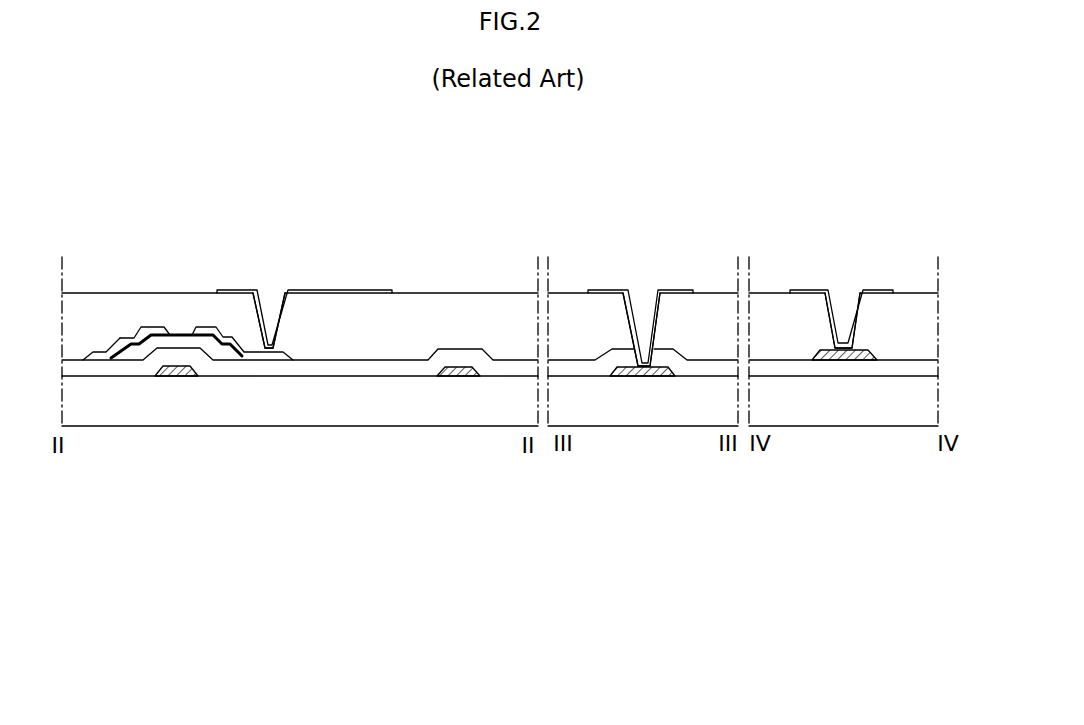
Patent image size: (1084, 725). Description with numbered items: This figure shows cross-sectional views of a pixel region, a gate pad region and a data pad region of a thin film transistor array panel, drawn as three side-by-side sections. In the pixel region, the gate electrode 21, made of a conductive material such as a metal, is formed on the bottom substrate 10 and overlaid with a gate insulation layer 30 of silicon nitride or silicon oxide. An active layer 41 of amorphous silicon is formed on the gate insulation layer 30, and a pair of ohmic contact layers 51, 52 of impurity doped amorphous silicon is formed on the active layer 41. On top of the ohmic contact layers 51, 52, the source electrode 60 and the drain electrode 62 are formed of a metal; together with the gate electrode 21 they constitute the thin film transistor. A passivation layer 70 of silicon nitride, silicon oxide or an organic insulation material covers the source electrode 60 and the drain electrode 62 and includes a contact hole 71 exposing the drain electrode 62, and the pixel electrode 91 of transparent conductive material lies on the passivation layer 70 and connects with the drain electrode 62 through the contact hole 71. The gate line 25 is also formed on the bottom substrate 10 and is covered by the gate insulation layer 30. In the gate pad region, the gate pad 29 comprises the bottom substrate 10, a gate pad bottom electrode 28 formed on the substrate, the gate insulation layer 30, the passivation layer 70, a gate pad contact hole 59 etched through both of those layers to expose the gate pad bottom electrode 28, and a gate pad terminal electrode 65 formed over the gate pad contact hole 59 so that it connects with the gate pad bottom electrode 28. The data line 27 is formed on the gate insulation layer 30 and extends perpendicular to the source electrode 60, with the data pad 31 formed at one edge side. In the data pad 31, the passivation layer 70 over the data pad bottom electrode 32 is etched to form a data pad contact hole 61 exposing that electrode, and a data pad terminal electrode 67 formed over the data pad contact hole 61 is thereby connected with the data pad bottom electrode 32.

The bottom substrate 10 is at (367, 410).
The gate electrode 21 is at (175, 377).
The gate line 25 is at (453, 380).
The data line 27 is at (91, 352).
The gate pad bottom electrode 28 is at (617, 378).
The gate pad 29 is at (644, 496).
The gate insulation layer 30 is at (303, 370).
The data pad 31 is at (843, 492).
The data pad bottom electrode 32 is at (838, 362).
The active layer 41 is at (212, 348).
The ohmic contact layer 51 is at (118, 362).
The ohmic contact layer 52 is at (241, 350).
The gate pad contact hole 59 is at (643, 290).
The source electrode 60 is at (150, 327).
The data pad contact hole 61 is at (845, 281).
The drain electrode 62 is at (203, 327).
The gate pad terminal electrode 65 is at (607, 288).
The data pad terminal electrode 67 is at (879, 290).
The passivation layer 70 is at (452, 298).
The contact hole 71 is at (268, 278).
The pixel electrode 91 is at (318, 290).